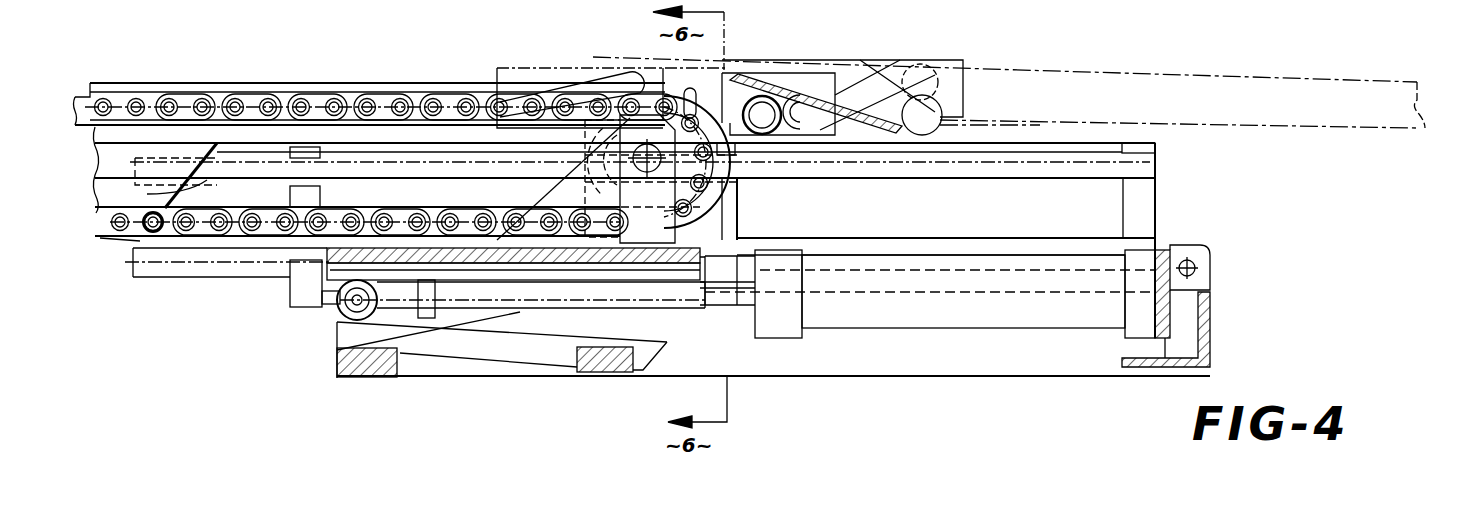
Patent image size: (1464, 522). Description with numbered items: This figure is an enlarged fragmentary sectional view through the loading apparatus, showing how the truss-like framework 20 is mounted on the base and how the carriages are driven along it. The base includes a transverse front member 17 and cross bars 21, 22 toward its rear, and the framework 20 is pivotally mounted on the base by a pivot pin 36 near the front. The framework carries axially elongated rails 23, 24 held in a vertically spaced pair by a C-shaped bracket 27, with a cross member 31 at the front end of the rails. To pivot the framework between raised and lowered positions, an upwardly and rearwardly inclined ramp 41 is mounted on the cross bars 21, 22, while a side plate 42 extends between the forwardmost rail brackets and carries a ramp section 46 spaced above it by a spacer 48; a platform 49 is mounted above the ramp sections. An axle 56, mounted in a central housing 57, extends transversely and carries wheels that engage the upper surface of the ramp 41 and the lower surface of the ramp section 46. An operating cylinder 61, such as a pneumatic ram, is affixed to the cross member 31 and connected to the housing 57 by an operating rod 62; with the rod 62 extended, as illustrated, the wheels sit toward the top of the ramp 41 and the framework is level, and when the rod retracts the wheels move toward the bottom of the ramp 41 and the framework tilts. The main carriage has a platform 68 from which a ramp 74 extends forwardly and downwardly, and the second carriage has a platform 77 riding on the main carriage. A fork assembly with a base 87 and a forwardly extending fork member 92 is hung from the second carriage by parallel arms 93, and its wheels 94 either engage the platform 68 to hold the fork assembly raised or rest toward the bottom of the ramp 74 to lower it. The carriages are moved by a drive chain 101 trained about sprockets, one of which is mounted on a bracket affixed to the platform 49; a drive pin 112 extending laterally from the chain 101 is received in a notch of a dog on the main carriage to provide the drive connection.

The drive chain 101 is at (220, 97).
The platform 68 is at (388, 84).
The platform 77 is at (533, 66).
The ramp 74 is at (790, 95).
The parallel arms 93 is at (880, 75).
The base 87 is at (948, 62).
The wheels 94 is at (945, 113).
The fork member 92 is at (1301, 86).
The rail 23 is at (208, 180).
The C-shaped bracket 27 is at (295, 193).
The platform 49 is at (562, 244).
The rail 24 is at (218, 270).
The cross member 31 is at (1125, 200).
The truss-like framework 20 is at (1168, 190).
The drive pin 112 is at (150, 230).
The side plate 42 is at (290, 300).
The spacer 48 is at (330, 303).
The axle 56 is at (345, 318).
The central housing 57 is at (406, 312).
The operating rod 62 is at (545, 300).
The ramp section 46 is at (625, 270).
The operating cylinder 61 is at (946, 324).
The pivot pin 36 is at (1212, 269).
The transverse front member 17 is at (1210, 324).
The cross bar 21 is at (348, 378).
The ramp 41 is at (510, 352).
The cross bar 22 is at (589, 374).